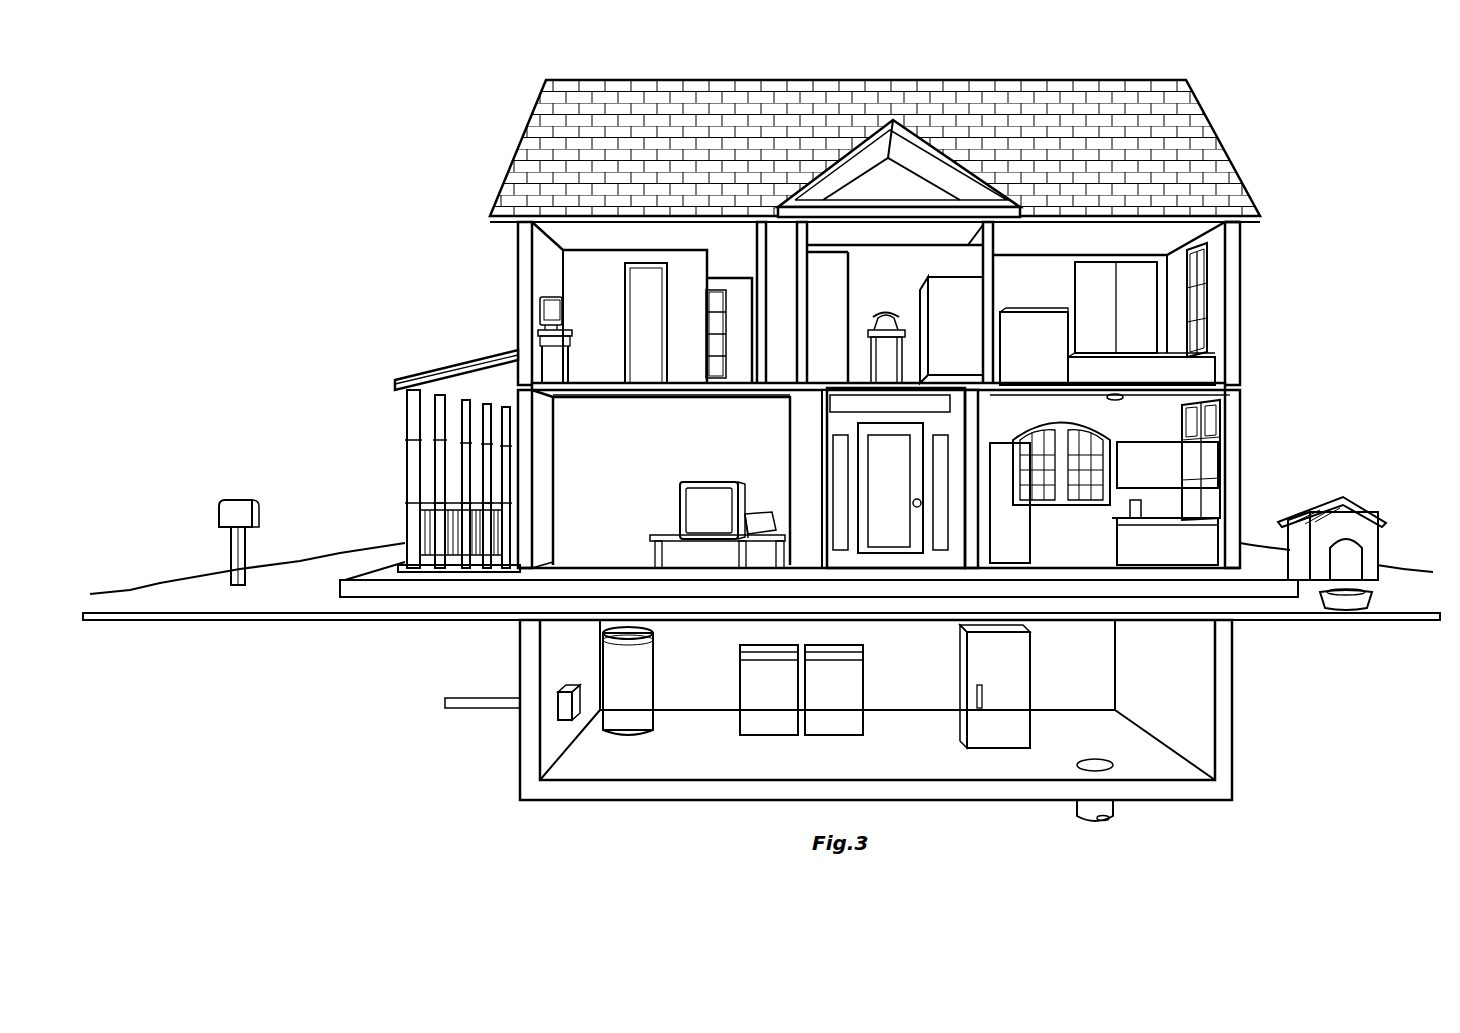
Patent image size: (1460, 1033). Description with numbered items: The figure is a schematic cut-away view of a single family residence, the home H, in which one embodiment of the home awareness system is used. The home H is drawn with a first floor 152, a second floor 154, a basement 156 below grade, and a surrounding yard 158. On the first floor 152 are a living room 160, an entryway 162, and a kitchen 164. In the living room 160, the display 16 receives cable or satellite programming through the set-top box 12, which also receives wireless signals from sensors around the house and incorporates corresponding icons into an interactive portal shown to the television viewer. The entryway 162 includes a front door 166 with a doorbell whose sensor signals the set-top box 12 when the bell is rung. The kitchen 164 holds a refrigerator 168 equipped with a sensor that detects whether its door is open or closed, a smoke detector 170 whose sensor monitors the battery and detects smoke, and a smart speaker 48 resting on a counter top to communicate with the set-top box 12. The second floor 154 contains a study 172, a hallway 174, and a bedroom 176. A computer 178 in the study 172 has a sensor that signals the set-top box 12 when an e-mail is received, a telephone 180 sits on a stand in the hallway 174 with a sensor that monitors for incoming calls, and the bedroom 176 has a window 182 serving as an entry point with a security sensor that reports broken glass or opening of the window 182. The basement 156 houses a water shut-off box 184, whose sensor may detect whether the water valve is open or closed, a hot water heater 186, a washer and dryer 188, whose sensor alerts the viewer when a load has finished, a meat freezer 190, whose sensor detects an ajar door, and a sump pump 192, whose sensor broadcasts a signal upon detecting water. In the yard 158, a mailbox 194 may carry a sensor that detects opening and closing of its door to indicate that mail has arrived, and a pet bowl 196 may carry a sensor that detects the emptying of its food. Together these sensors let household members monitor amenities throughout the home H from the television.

The home H is at (1252, 86).
The set-top box 12 is at (762, 512).
The display 16 is at (690, 502).
The smart speaker 48 is at (1142, 508).
The first floor 152 is at (1238, 456).
The second floor 154 is at (1237, 322).
The basement 156 is at (1232, 722).
The yard 158 is at (140, 592).
The living room 160 is at (683, 447).
The entryway 162 is at (950, 422).
The kitchen 164 is at (1117, 548).
The front door 166 is at (915, 510).
The refrigerator 168 is at (1030, 512).
The smoke detector 170 is at (1116, 400).
The study 172 is at (612, 284).
The hallway 174 is at (941, 267).
The bedroom 176 is at (1048, 289).
The computer 178 is at (562, 318).
The telephone 180 is at (880, 312).
The window 182 is at (1195, 272).
The water shut-off box 184 is at (578, 708).
The hot water heater 186 is at (655, 668).
The washer and dryer 188 is at (866, 676).
The meat freezer 190 is at (1032, 686).
The sump pump 192 is at (1112, 818).
The mailbox 194 is at (238, 500).
The pet bowl 196 is at (1372, 602).